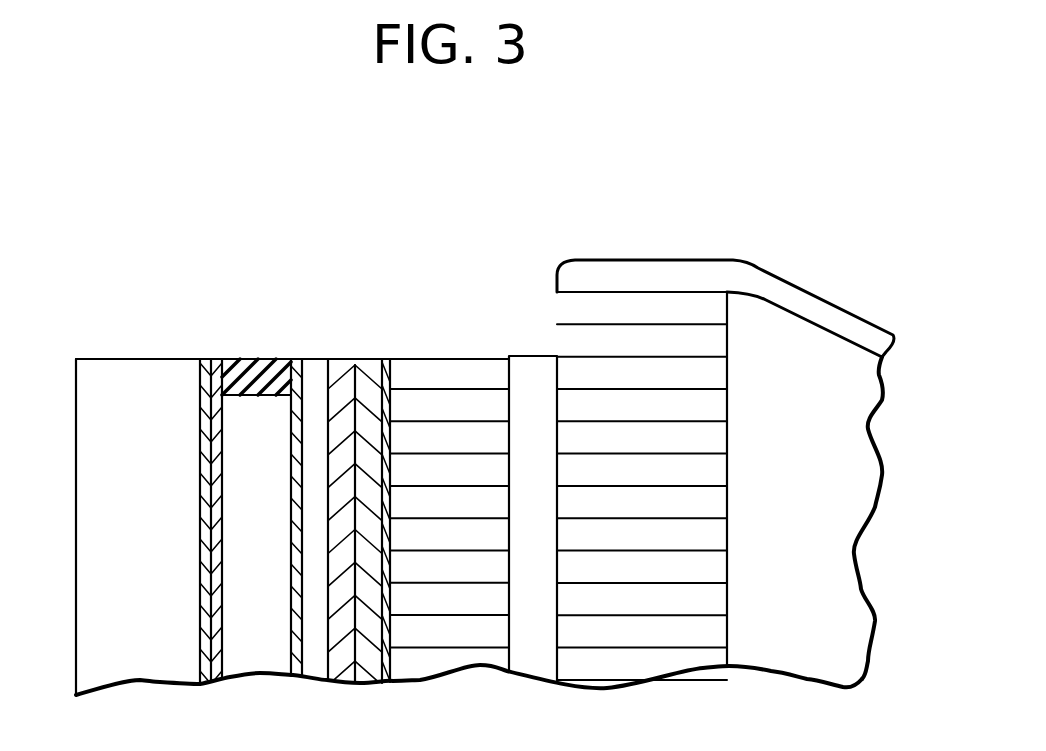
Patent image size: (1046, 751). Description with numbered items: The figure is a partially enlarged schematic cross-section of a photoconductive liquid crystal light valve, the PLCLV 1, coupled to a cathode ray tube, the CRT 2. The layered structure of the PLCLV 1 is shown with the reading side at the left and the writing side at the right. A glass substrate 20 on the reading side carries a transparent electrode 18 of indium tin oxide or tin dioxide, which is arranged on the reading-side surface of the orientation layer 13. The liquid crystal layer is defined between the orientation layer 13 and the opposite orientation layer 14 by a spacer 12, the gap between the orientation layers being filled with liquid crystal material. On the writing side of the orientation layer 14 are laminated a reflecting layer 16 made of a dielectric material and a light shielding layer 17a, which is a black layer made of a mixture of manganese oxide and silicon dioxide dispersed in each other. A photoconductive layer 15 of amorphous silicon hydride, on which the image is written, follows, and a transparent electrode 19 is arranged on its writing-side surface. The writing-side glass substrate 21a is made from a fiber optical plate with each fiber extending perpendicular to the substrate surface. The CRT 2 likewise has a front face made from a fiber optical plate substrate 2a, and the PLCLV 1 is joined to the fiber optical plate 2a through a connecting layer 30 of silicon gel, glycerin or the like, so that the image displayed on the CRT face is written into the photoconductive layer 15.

The PLCLV 1 is at (116, 227).
The CRT 2 is at (740, 270).
The fiber optical plate substrate 2a is at (555, 292).
The spacer 12 is at (262, 357).
The orientation layer 13 is at (219, 357).
The orientation layer 14 is at (300, 357).
The photoconductive layer 15 is at (370, 357).
The reflecting layer 16 is at (317, 357).
The light shielding layer 17a is at (345, 357).
The transparent electrode 18 is at (205, 357).
The transparent electrode 19 is at (387, 357).
The glass substrate 20 is at (129, 372).
The glass substrate 21a is at (456, 373).
The connecting layer 30 is at (533, 367).